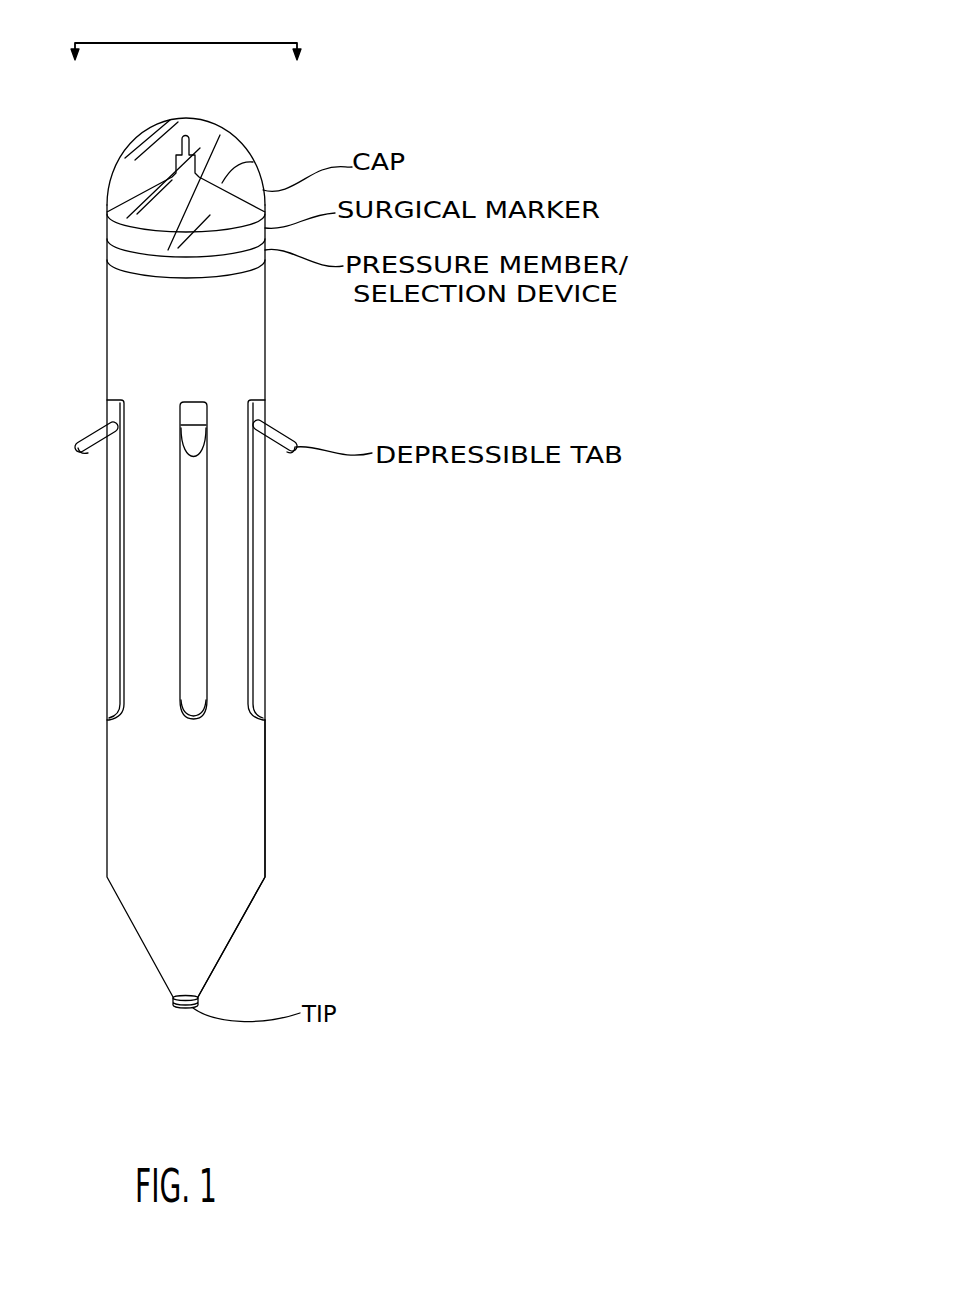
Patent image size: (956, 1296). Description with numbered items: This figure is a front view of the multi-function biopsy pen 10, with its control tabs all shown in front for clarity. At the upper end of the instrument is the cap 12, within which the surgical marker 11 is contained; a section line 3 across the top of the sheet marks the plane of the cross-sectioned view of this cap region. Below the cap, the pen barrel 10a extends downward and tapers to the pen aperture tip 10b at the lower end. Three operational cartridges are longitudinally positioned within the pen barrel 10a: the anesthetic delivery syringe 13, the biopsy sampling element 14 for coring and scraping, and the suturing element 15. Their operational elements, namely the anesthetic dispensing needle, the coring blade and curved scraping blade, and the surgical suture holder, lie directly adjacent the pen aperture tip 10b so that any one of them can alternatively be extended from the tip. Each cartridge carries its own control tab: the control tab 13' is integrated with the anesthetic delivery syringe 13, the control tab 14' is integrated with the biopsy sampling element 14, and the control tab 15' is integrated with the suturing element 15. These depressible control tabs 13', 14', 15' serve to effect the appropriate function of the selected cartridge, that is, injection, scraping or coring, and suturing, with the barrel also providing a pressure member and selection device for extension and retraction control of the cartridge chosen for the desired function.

The section line 3- 3 is at (183, 38).
The biopsy pen 10 is at (300, 780).
The pen barrel 10a is at (260, 858).
The pen aperture tip 10b is at (187, 1010).
The surgical marker 11 is at (258, 162).
The cap 12 is at (222, 128).
The anesthetic delivery syringe 13 is at (68, 560).
The control tab 13' is at (84, 419).
The biopsy sampling element 14 is at (285, 560).
The control tab 14' is at (252, 393).
The suturing element 15 is at (298, 560).
The control tab 15' is at (293, 406).